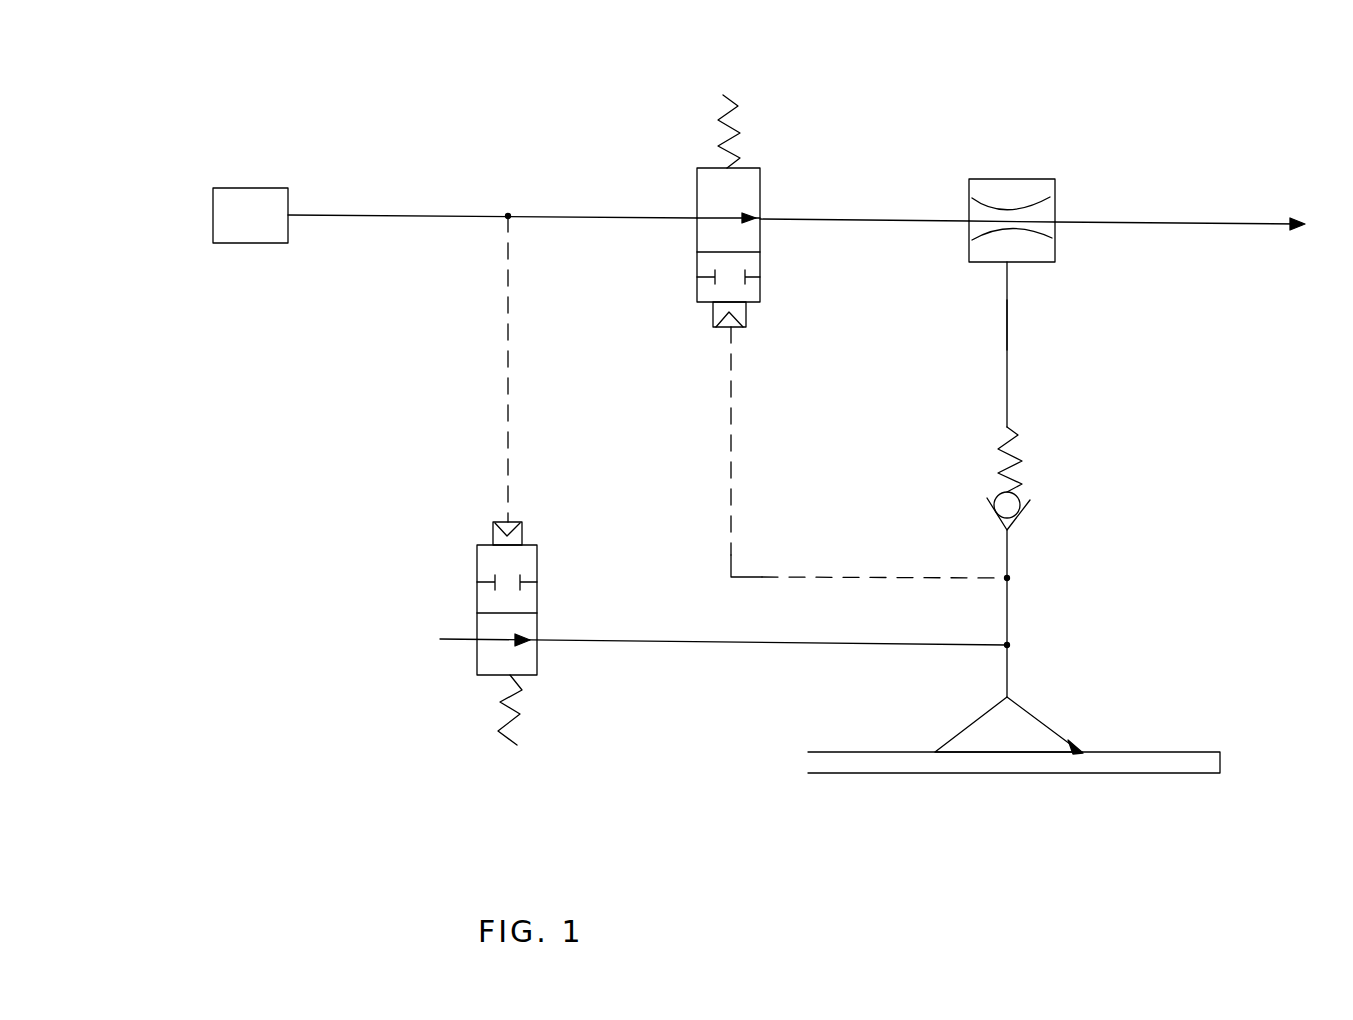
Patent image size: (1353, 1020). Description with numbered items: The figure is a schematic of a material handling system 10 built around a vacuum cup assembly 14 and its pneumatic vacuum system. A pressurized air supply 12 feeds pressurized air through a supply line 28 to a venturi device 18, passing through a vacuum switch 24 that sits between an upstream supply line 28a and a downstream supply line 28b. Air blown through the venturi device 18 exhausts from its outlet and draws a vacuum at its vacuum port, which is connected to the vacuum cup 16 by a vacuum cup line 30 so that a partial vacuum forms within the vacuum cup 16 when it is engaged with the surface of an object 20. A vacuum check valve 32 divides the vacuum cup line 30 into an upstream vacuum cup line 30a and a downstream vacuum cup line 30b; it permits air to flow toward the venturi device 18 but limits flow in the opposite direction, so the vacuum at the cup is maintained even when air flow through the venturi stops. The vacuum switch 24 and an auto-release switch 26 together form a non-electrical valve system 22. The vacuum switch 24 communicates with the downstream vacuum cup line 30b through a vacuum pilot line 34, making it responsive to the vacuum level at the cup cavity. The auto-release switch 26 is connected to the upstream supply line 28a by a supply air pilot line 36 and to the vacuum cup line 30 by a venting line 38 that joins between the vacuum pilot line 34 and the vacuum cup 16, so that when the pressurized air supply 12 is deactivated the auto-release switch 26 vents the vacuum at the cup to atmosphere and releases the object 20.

The material handling system 10 is at (410, 113).
The pressurized air supply 12 is at (238, 260).
The vacuum cup assembly 14 is at (1170, 535).
The vacuum cup 16 is at (1025, 718).
The venturi device 18 is at (1020, 178).
The object 20 is at (1172, 761).
The valve system 22 is at (360, 596).
The vacuum switch 24 is at (762, 186).
The auto-release switch 26 is at (477, 664).
The supply line 28 is at (385, 200).
The upstream supply line 28a is at (593, 216).
The downstream supply line 28b is at (847, 223).
The vacuum cup line 30 is at (990, 395).
The upstream vacuum cup line 30a is at (1010, 350).
The downstream vacuum cup line 30b is at (1010, 606).
The vacuum check valve 32 is at (1035, 487).
The vacuum pilot line 34 is at (735, 487).
The supply air pilot line 36 is at (512, 378).
The venting line 38 is at (712, 642).